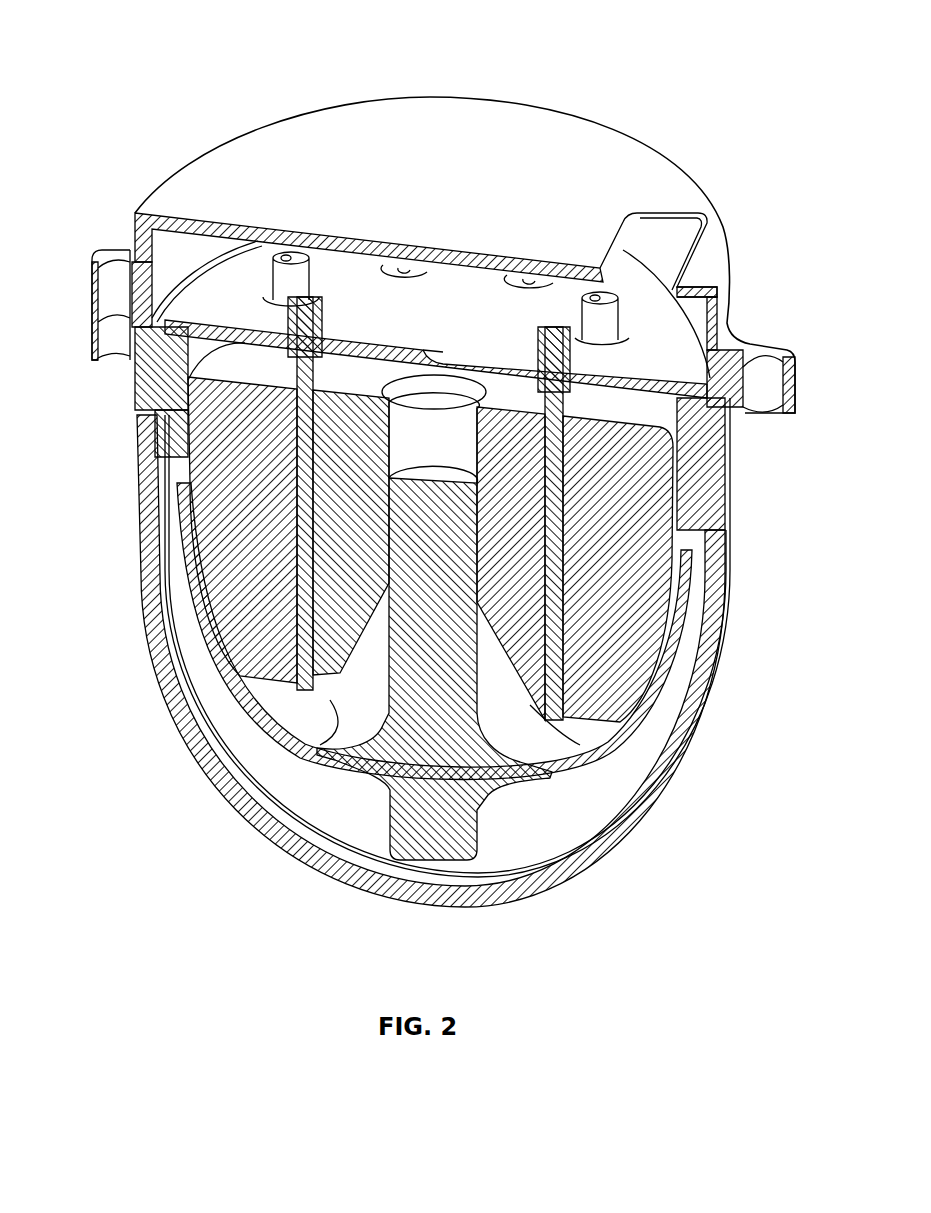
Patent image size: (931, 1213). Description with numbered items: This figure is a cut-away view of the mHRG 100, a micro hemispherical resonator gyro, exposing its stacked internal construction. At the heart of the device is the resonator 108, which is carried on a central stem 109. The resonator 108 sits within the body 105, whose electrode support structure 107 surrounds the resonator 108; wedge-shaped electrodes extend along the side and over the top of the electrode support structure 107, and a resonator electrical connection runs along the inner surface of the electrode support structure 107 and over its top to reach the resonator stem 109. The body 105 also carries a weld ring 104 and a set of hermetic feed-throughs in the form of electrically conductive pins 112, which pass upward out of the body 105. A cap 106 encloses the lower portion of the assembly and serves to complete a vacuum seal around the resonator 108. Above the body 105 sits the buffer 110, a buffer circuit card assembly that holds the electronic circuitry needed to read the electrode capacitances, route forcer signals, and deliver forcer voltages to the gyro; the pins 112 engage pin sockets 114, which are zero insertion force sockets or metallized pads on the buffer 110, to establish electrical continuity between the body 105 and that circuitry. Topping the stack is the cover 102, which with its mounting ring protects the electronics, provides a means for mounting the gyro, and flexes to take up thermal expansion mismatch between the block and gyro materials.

The mHRG 100 is at (100, 44).
The cover 102 is at (594, 130).
The weld ring 104 is at (686, 497).
The body 105 is at (250, 593).
The cap 106 is at (724, 672).
The electrode support structure 107 is at (642, 502).
The resonator 108 is at (626, 751).
The stem 109 is at (398, 670).
The buffer 110 is at (676, 328).
The electrically conductive pins 112 is at (300, 530).
The pin sockets 114 is at (319, 300).